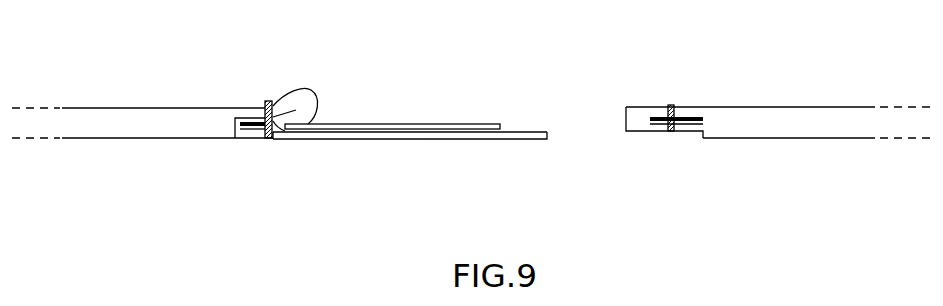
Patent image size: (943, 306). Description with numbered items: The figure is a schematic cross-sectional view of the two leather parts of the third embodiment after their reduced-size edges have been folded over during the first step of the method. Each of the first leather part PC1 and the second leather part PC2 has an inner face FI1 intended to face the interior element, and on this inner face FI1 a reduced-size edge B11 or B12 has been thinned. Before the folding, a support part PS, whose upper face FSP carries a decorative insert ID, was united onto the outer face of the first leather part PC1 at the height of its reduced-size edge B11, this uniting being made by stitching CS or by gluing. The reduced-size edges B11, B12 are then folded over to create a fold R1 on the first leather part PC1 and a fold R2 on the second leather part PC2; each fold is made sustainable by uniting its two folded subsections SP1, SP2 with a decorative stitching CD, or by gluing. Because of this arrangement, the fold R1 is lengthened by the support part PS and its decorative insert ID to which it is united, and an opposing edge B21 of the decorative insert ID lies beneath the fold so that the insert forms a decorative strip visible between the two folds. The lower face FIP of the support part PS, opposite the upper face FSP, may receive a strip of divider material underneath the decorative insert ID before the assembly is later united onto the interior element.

The first leather part PC1 is at (118, 106).
The second leather part PC2 is at (830, 106).
The reduced-size edge of first leather part B11 is at (240, 106).
The reduced-size edge of second leather part B12 is at (693, 106).
The opposing edge of decorative insert B21 is at (297, 135).
The inner face FI1 is at (117, 142).
The stitching CS is at (258, 141).
The fold of first leather part R1 is at (265, 123).
The fold of second leather part R2 is at (665, 127).
The first folded subsection SP1 is at (259, 105).
The second folded subsection SP2 is at (278, 133).
The decorative stitching CD is at (281, 101).
The support part PS is at (407, 139).
The upper face of support part FSP is at (517, 131).
The lower face of support part FIP is at (507, 141).
The decorative insert ID is at (388, 124).